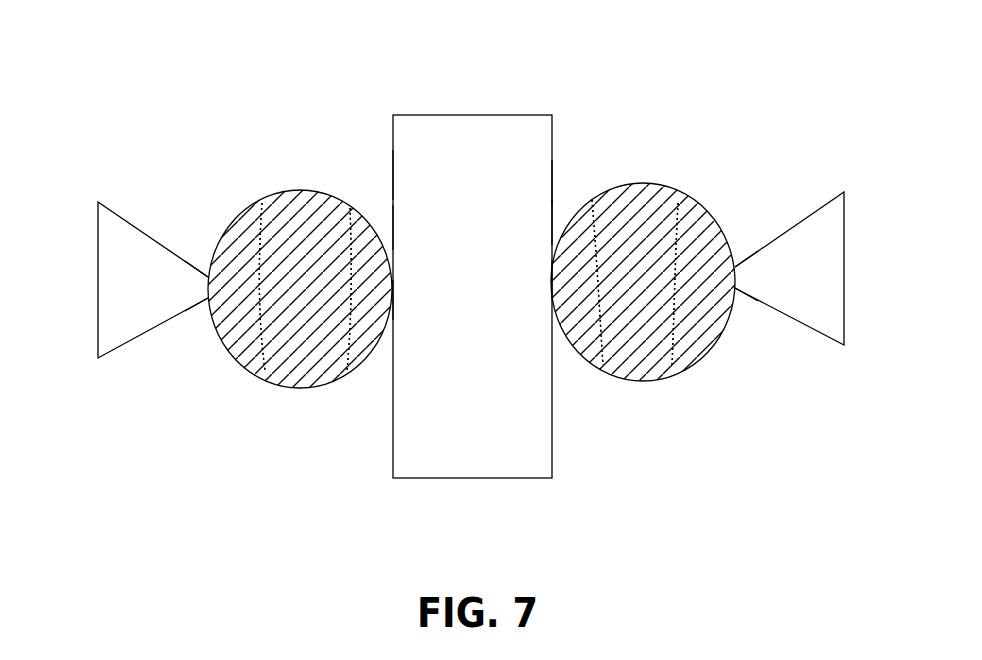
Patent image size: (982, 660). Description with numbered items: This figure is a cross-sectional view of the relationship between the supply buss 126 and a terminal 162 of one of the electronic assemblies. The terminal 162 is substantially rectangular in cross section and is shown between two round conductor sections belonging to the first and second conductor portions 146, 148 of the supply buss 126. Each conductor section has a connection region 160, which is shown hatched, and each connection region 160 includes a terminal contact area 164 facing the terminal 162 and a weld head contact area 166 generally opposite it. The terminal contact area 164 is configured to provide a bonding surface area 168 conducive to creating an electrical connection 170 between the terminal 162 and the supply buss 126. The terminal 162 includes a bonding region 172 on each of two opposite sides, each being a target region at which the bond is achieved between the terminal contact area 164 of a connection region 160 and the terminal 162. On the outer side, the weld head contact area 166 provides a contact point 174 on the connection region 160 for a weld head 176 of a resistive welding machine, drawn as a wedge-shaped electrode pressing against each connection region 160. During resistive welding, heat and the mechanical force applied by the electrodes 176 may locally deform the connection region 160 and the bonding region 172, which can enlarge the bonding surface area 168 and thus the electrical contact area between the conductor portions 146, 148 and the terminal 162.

The supply buss 126 is at (774, 76).
The first conductor portion 146 is at (279, 181).
The second conductor portion 148 is at (668, 176).
The connection region 160 is at (307, 340).
The terminal 162 is at (469, 150).
The terminal contact area 164 is at (367, 350).
The weld head contact area 166 is at (242, 345).
The bonding surface area 168 is at (397, 299).
The electrical connection 170 is at (391, 223).
The bonding region 172 is at (390, 175).
The contact point 174 is at (206, 268).
The weld head 176 is at (118, 232).